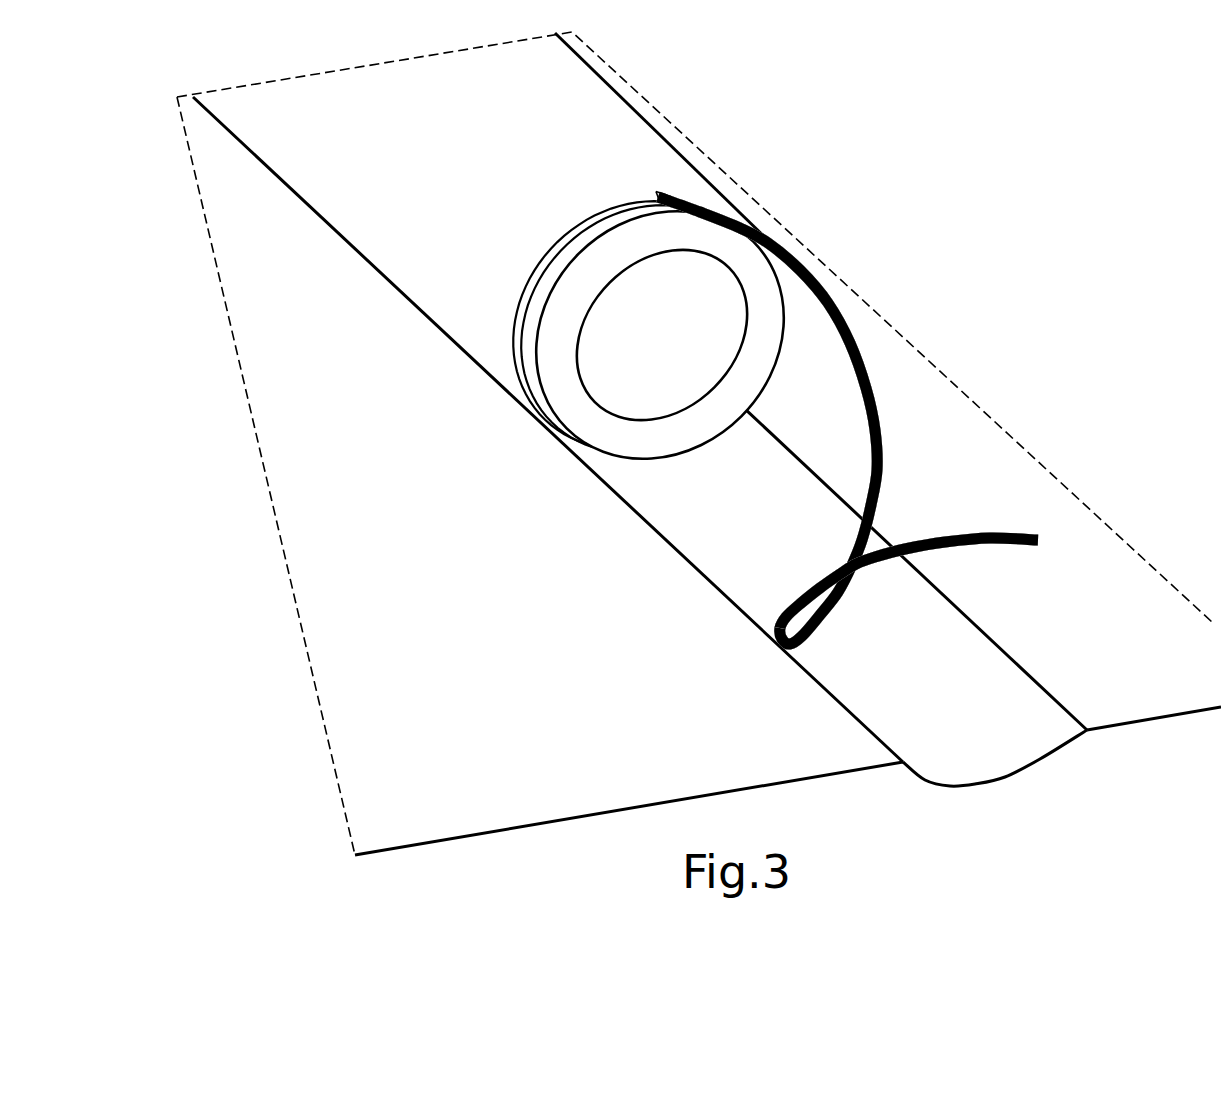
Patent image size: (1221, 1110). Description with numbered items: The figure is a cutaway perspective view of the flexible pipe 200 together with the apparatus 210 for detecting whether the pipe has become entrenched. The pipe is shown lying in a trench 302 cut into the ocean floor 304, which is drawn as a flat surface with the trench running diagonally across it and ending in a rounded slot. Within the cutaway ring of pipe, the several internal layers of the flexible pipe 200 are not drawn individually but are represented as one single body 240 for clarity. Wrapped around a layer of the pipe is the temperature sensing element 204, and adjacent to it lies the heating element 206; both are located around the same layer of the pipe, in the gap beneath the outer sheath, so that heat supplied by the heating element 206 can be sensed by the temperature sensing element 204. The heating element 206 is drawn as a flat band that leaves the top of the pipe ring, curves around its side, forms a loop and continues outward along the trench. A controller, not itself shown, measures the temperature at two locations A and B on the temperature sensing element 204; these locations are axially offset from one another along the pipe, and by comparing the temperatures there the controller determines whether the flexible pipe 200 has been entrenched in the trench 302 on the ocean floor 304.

The flexible pipe 200 is at (336, 252).
The temperature sensing element 204 is at (867, 470).
The heating element 206 is at (860, 350).
The apparatus 210 is at (670, 176).
The single body 240 is at (553, 372).
The trench 302 is at (675, 548).
The ocean floor 304 is at (398, 585).
The location A is at (657, 194).
The location B is at (858, 582).